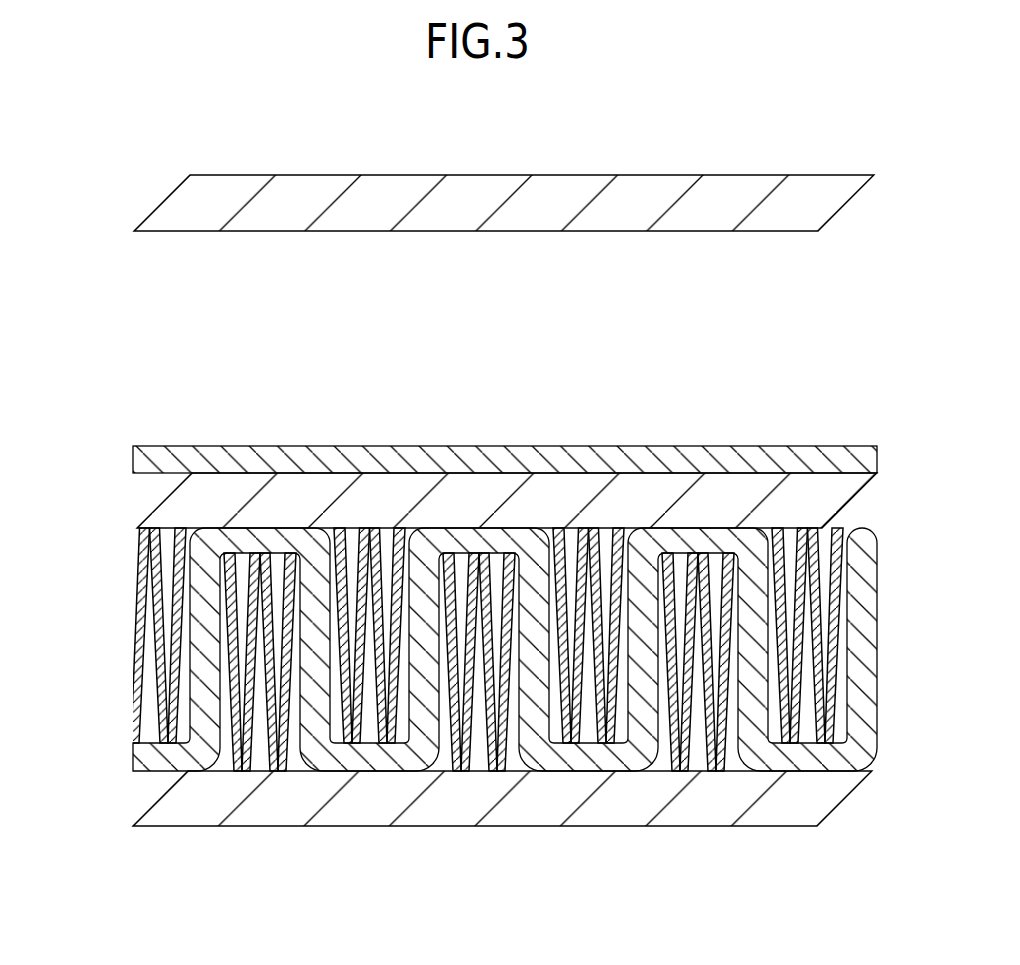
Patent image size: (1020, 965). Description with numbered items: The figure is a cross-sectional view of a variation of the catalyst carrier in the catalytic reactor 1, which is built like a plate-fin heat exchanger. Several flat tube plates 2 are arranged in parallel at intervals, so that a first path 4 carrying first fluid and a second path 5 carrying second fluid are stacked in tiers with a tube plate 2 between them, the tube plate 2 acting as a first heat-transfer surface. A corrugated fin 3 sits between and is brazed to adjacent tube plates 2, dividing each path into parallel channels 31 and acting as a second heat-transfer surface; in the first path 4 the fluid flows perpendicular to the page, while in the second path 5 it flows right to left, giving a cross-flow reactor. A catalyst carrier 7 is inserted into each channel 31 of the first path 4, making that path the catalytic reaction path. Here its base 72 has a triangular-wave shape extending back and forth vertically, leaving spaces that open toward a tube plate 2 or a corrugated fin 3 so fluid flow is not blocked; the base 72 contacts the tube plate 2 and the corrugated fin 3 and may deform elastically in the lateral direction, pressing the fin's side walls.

The catalytic reactor 1 is at (643, 113).
The tube plate 2 is at (153, 207).
The corrugated fin 3 is at (469, 653).
The first path 4 is at (452, 734).
The second path 5 is at (157, 350).
The channel 31 is at (215, 770).
The catalyst carrier 7 is at (478, 734).
The base 72 is at (277, 771).